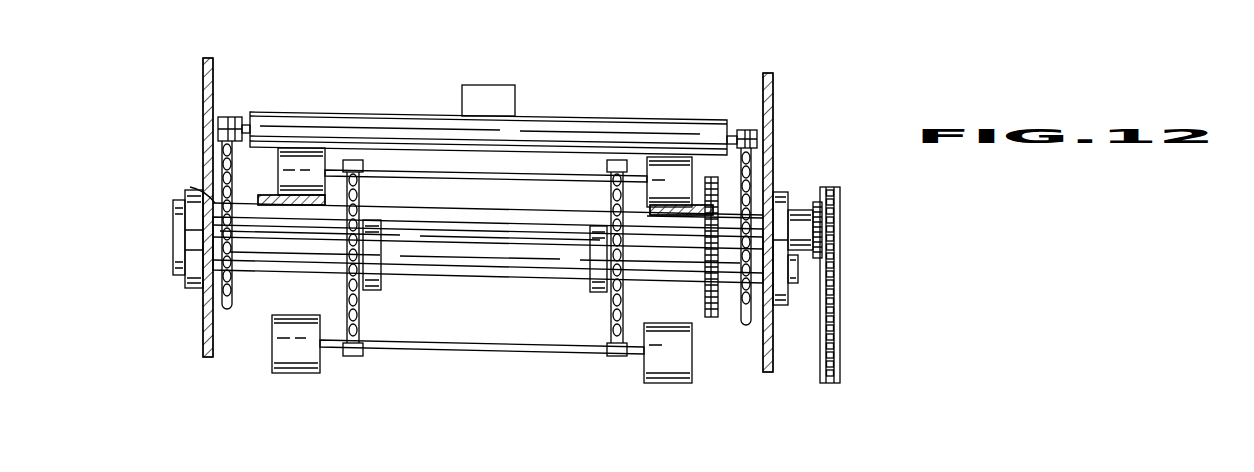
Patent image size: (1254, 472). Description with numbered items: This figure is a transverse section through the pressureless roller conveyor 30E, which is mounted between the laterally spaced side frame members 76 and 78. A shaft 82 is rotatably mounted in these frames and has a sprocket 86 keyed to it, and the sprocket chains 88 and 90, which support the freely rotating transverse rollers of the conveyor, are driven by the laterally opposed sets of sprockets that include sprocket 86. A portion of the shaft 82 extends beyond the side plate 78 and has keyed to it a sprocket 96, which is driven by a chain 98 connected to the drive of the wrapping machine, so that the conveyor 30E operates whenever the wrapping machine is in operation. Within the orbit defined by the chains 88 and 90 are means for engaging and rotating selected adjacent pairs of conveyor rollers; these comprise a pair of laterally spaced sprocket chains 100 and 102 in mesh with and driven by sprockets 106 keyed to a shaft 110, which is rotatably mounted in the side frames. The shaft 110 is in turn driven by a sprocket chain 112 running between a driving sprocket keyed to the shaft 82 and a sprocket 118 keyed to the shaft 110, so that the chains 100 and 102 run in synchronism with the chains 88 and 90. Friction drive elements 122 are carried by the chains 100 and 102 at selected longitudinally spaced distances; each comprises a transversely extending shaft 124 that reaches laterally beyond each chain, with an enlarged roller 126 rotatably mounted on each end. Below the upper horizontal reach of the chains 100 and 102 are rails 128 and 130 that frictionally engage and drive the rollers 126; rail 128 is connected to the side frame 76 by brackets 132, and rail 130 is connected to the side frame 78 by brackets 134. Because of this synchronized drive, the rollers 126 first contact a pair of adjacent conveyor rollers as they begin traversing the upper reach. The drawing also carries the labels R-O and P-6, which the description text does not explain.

The conveyor 30E is at (708, 87).
The side frame member 76 is at (203, 80).
The side frame member 78 is at (773, 97).
The shaft 82 is at (175, 213).
The sprocket 86 is at (232, 297).
The sprocket chain 88 is at (218, 123).
The sprocket chain 90 is at (757, 136).
The sprocket 96 is at (835, 221).
The chain 98 is at (840, 292).
The sprocket chain 100 is at (356, 183).
The sprocket chain 102 is at (612, 165).
The sprocket 106 is at (356, 306).
The shaft 110 is at (462, 266).
The sprocket chain 112 is at (700, 250).
The sprocket 118 is at (705, 296).
The friction drive element 122 is at (262, 355).
The shaft 124 is at (487, 172).
The roller 126 is at (296, 150).
The rail 128 is at (268, 196).
The rail 130 is at (607, 196).
The bracket 132 is at (190, 186).
The bracket 134 is at (728, 217).
The roll R-O is at (380, 113).
The press P-6 is at (490, 95).